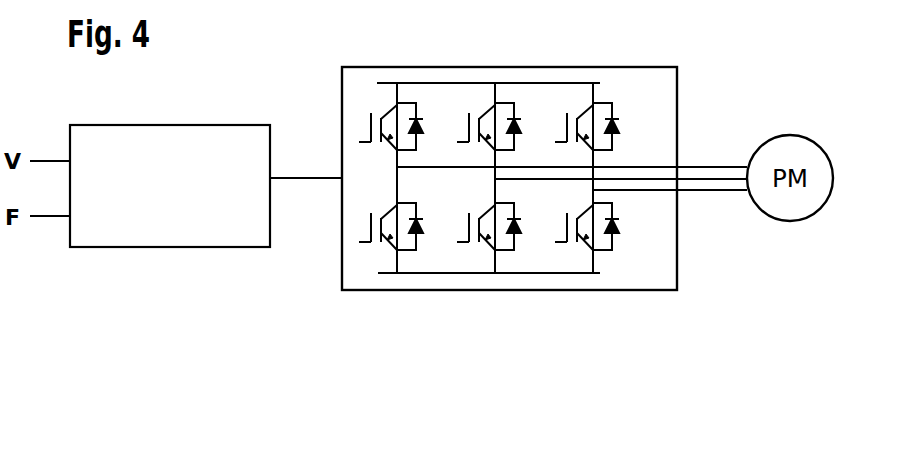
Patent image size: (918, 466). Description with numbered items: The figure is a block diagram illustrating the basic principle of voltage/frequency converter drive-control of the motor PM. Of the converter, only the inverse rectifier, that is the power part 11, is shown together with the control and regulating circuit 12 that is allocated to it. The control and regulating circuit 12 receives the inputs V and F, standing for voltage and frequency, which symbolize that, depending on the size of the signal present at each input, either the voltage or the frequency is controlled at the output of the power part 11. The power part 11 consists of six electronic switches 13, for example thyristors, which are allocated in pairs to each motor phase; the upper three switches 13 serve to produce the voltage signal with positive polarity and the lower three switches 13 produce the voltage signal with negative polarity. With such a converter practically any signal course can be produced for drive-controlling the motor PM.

The power part 11 is at (535, 214).
The control and regulating circuit 12 is at (135, 233).
The electronic switches 13 is at (567, 232).